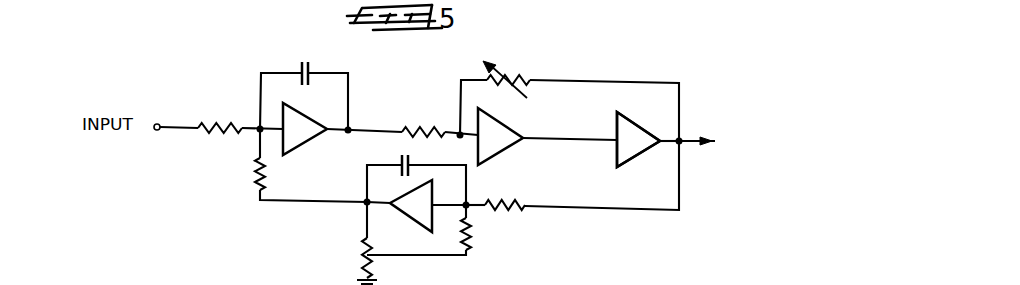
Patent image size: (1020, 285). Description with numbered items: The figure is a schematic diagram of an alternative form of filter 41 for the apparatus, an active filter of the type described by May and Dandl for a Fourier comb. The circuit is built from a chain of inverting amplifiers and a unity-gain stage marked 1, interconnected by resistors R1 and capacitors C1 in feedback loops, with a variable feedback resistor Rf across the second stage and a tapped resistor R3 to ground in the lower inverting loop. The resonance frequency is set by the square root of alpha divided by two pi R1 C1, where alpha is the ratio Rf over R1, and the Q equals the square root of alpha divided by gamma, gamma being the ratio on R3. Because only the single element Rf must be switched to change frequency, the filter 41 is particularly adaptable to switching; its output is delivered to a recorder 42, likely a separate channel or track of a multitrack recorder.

The filter 41 is at (190, 104).
The recorder 42 is at (751, 150).
The resistor R1 is at (361, 175).
The capacitor C1 is at (369, 113).
The feedback resistor Rf is at (540, 70).
The resistor R3 is at (357, 256).
The unity gain amplifier 1 is at (638, 139).